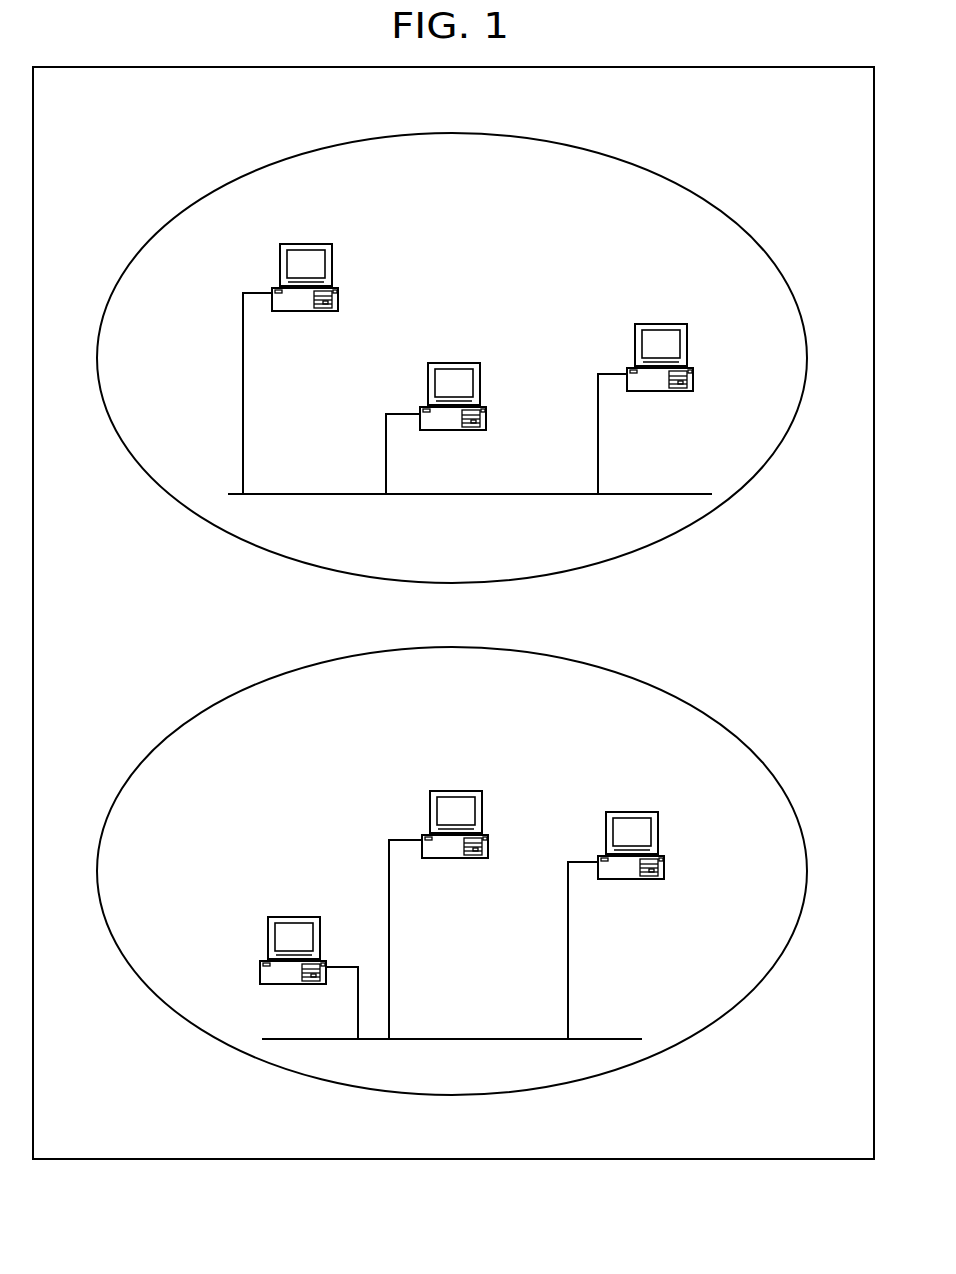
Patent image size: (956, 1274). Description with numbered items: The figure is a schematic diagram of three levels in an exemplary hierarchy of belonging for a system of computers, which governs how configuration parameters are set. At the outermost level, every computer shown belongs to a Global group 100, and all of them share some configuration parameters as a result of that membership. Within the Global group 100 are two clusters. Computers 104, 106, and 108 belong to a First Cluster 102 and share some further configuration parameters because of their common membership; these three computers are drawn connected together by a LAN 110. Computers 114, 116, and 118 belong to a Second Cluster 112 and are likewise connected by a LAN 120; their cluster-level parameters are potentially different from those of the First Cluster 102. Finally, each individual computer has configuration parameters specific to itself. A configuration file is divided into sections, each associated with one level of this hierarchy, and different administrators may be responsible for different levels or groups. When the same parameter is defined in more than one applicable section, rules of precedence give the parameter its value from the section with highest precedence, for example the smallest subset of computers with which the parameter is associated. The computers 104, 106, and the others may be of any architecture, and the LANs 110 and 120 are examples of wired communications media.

The Global group 100 is at (228, 107).
The First Cluster 102 is at (475, 247).
The computer 104 is at (296, 369).
The computer 106 is at (439, 428).
The computer 108 is at (650, 409).
The LAN 110 is at (550, 494).
The Second Cluster 112 is at (480, 761).
The computer 114 is at (305, 978).
The computer 116 is at (442, 915).
The computer 118 is at (620, 925).
The LAN 120 is at (468, 1039).